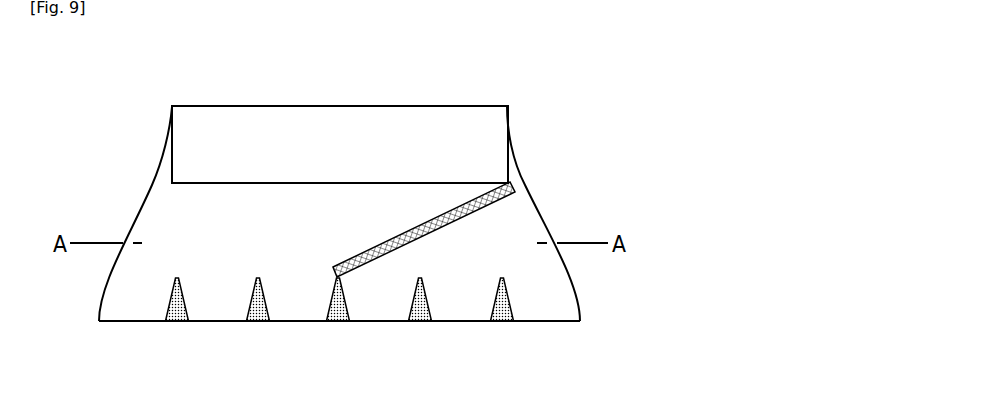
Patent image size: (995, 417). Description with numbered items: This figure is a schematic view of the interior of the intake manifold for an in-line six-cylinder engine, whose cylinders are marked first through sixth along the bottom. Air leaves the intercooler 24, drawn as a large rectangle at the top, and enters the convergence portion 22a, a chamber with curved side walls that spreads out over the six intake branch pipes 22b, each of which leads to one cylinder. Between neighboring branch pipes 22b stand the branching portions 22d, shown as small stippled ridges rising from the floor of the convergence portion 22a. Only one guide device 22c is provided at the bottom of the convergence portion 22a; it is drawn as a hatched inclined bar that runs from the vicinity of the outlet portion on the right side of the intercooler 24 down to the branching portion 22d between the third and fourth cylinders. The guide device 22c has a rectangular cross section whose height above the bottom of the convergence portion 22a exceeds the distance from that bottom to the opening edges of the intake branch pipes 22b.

The convergence portion 22a is at (131, 238).
The intake branch pipes 22b is at (143, 302).
The guide device 22c is at (513, 188).
The branching portion 22d is at (176, 277).
The intercooler 24 is at (378, 106).